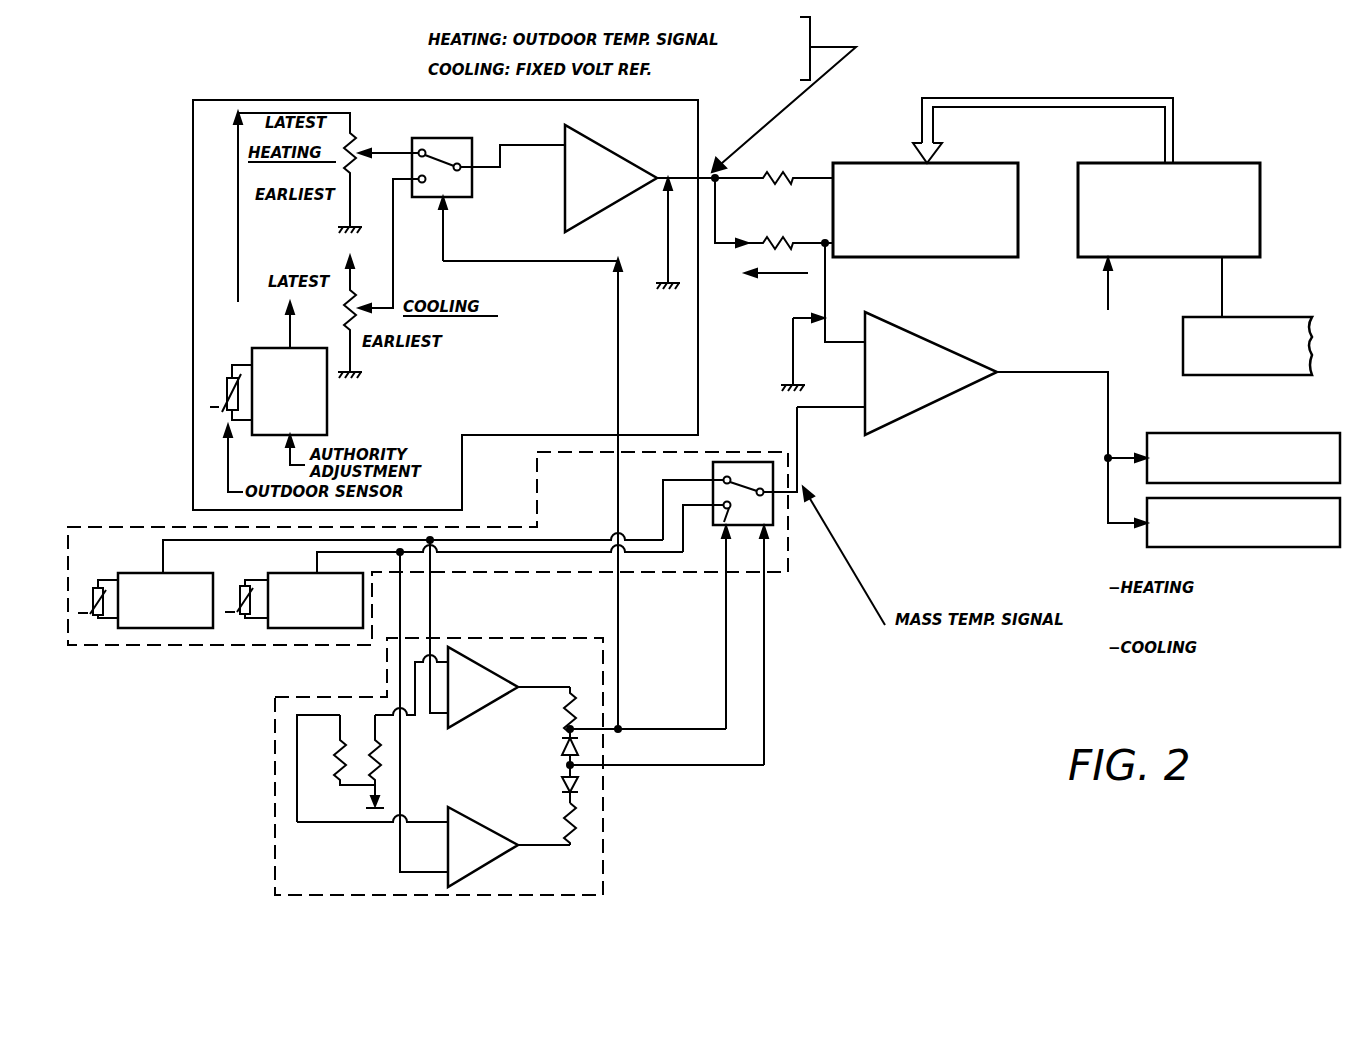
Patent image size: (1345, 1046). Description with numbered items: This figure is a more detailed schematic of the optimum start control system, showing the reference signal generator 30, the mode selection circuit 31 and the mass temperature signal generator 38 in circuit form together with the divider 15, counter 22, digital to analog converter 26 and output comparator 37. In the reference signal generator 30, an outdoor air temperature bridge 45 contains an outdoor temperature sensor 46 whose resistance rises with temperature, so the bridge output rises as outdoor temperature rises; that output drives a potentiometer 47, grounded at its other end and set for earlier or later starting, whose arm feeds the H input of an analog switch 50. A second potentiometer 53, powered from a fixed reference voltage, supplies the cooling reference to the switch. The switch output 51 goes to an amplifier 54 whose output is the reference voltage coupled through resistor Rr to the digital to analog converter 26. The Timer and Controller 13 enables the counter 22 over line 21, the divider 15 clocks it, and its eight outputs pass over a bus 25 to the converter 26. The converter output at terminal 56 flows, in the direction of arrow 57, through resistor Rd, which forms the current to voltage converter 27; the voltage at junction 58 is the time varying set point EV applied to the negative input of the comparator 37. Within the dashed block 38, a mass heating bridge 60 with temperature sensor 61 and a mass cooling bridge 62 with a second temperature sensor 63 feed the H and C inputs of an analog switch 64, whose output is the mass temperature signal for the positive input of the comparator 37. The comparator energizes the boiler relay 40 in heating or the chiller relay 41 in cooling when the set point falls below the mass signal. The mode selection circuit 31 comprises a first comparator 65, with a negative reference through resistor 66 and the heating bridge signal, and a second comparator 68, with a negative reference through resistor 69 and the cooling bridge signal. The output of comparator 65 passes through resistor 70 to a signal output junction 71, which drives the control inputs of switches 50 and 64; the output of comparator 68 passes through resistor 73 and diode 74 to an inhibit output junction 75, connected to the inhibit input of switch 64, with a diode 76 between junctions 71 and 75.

The reference signal generator 30 is at (193, 232).
The potentiometer 47 is at (361, 136).
The analog switch 50 is at (457, 138).
The output of the analog switch 51 is at (474, 167).
The potentiometer 53 is at (370, 291).
The amplifier 54 is at (600, 212).
The outdoor temperature sensor 46 is at (227, 383).
The outdoor air temperature bridge 45 is at (327, 405).
The terminal 56 is at (825, 236).
The arrow 57 is at (758, 277).
The junction 58 is at (822, 240).
The bus 25 is at (1066, 98).
The counter 22 is at (1206, 163).
The digital to analog converter 26 is at (920, 257).
The current to voltage converter 27 is at (873, 294).
The line 21 is at (1108, 290).
The Timer and Controller 13 is at (1108, 350).
The divider 15 is at (1278, 317).
The comparator 37 is at (920, 405).
The relay 41 is at (1326, 433).
The relay 40 is at (1328, 547).
The analog switch 64 is at (713, 468).
The mass temperature signal generator 38 is at (665, 574).
The temperature sensor 61 is at (95, 590).
The mass cooling bridge 62 is at (296, 573).
The mass heating bridge 60 is at (173, 630).
The second temperature sensor 63 is at (243, 618).
The first comparator 65 is at (496, 674).
The resistor 66 is at (372, 750).
The resistor 69 is at (336, 755).
The second comparator 68 is at (487, 790).
The resistor 70 is at (564, 710).
The signal output junction 71 is at (561, 734).
The diode 76 is at (562, 752).
The inhibit output junction 75 is at (563, 773).
The diode 74 is at (566, 794).
The resistor 73 is at (565, 822).
The mode selection circuit 31 is at (603, 822).